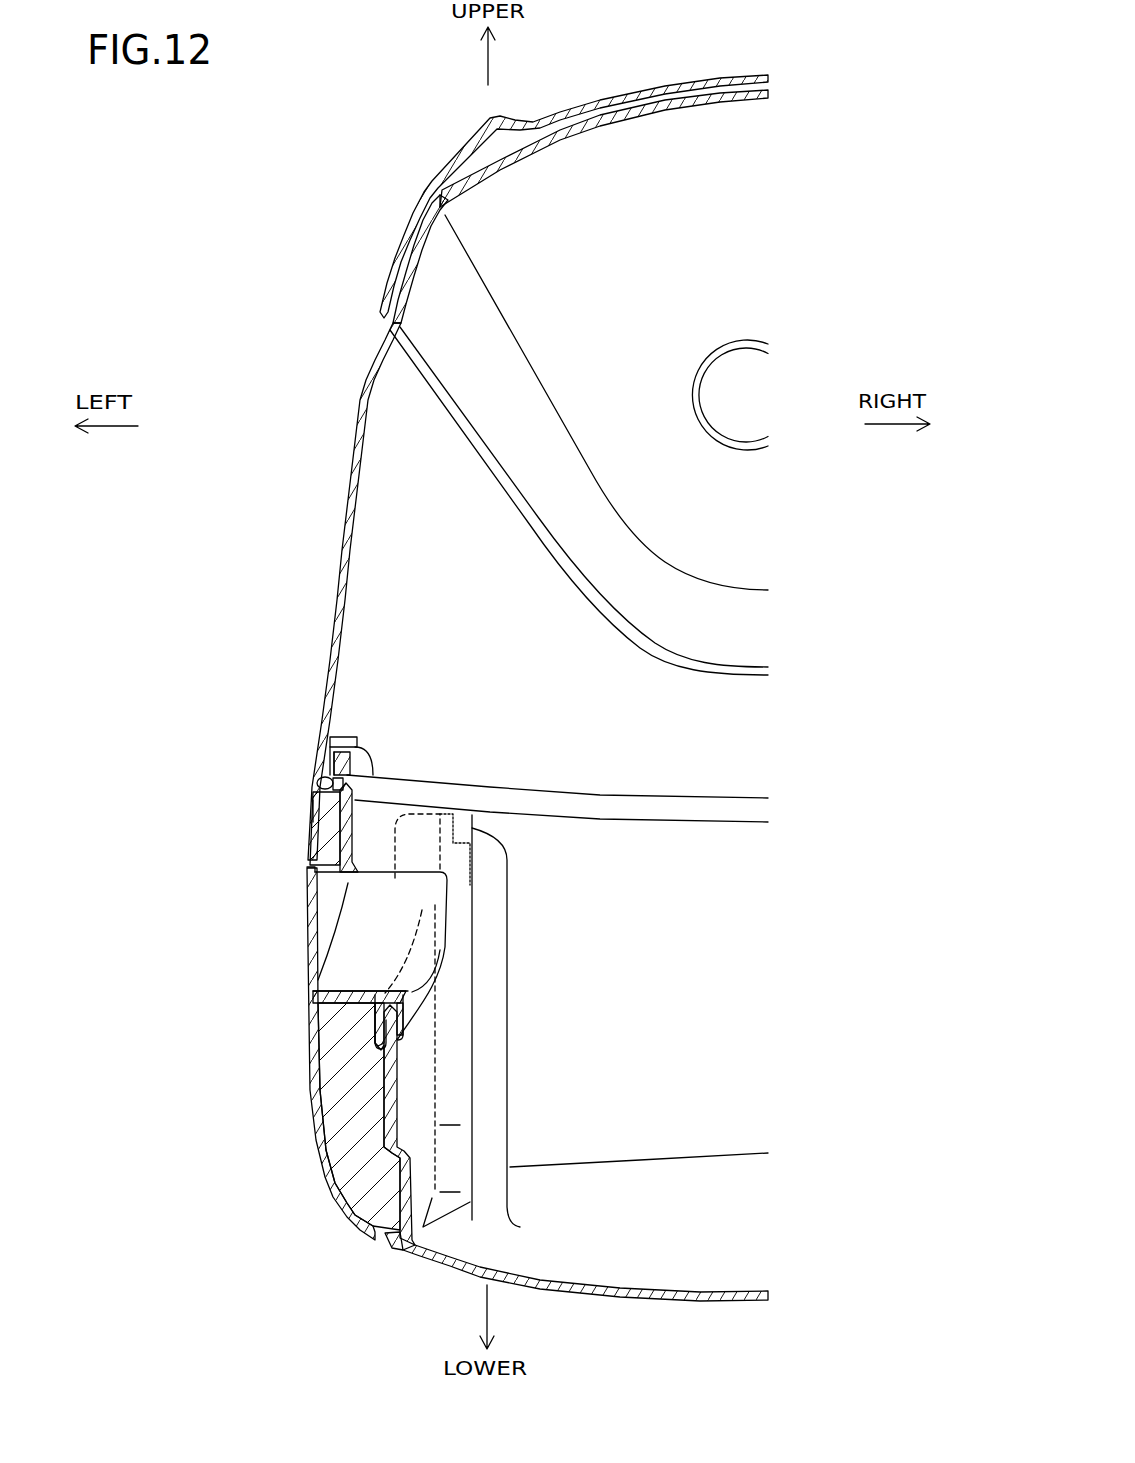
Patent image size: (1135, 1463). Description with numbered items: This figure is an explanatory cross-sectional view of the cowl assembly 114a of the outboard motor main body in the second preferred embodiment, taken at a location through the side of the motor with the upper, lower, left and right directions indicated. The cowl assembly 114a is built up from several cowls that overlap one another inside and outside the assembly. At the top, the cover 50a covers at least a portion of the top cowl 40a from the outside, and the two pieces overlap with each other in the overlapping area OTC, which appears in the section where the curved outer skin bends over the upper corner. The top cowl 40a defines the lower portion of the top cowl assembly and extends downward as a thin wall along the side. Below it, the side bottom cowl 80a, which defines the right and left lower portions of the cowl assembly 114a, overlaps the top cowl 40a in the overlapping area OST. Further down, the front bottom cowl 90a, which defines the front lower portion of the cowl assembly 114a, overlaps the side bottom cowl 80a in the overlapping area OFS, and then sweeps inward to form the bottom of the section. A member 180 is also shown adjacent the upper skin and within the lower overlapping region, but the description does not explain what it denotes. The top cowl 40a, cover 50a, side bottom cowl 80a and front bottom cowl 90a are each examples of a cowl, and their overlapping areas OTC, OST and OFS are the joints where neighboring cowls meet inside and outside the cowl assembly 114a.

The cowl assembly 114a is at (802, 44).
The trim member 180 is at (703, 82).
The cover 50a is at (410, 208).
The top cowl 40a is at (370, 357).
The side bottom cowl 80a is at (323, 1177).
The front bottom cowl 90a is at (435, 1265).
The overlapping area OTC is at (443, 173).
The overlapping area OST is at (312, 810).
The overlapping area OFS is at (316, 1069).